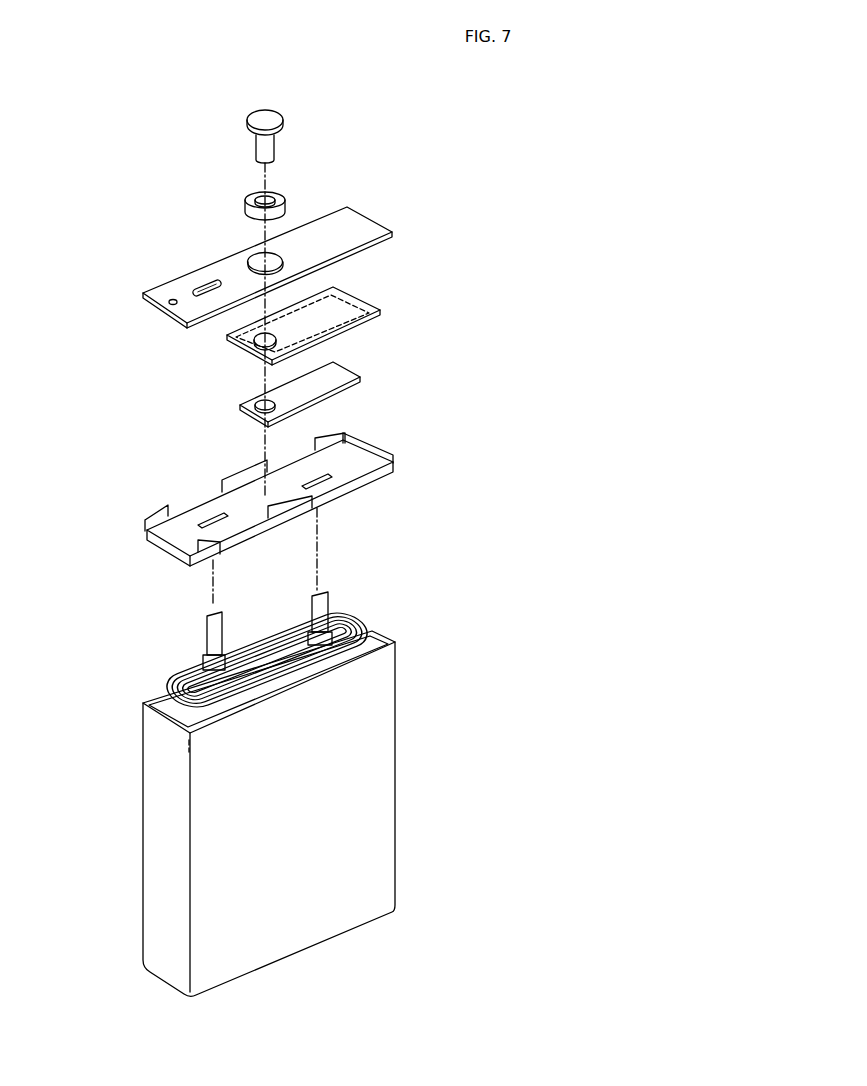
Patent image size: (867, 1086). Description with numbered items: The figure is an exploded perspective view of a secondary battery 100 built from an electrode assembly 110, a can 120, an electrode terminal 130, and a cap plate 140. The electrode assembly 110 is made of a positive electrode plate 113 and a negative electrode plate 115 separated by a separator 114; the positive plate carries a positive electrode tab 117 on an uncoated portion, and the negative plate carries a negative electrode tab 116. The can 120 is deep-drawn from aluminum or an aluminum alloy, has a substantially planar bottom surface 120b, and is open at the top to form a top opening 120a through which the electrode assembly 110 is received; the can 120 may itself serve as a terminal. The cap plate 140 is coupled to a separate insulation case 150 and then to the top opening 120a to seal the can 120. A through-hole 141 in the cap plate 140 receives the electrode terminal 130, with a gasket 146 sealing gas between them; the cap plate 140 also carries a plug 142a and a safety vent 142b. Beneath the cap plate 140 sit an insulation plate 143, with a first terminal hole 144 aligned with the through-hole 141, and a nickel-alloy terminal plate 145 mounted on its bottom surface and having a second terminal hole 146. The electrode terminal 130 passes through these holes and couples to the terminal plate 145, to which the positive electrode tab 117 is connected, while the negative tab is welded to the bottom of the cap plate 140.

The secondary battery 100 is at (102, 136).
The electrode assembly 110 is at (276, 620).
The positive electrode plate 113 is at (400, 604).
The separator 114 is at (360, 625).
The negative electrode plate 115 is at (347, 620).
The negative electrode tab 116 is at (215, 638).
The positive electrode tab 117 is at (317, 610).
The can 120 is at (317, 804).
The top opening 120a is at (387, 635).
The bottom surface 120b is at (377, 920).
The electrode terminal 130 is at (273, 121).
The cap plate 140 is at (276, 261).
The through-hole 141 is at (255, 257).
The plug 142a is at (170, 300).
The safety vent 142b is at (205, 283).
The insulation plate 143 is at (305, 336).
The first terminal hole 144 is at (245, 348).
The terminal plate 145 is at (343, 368).
The gasket 146 is at (248, 198).
The insulation case 150 is at (145, 536).